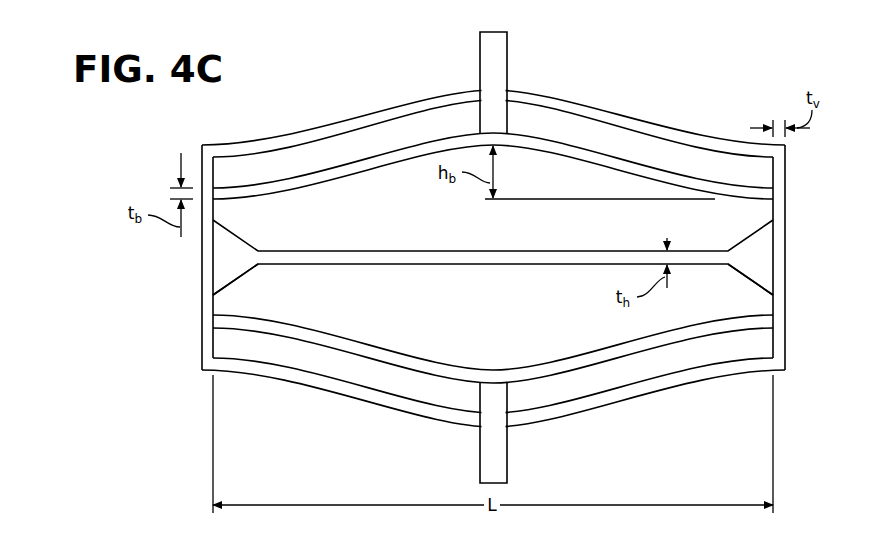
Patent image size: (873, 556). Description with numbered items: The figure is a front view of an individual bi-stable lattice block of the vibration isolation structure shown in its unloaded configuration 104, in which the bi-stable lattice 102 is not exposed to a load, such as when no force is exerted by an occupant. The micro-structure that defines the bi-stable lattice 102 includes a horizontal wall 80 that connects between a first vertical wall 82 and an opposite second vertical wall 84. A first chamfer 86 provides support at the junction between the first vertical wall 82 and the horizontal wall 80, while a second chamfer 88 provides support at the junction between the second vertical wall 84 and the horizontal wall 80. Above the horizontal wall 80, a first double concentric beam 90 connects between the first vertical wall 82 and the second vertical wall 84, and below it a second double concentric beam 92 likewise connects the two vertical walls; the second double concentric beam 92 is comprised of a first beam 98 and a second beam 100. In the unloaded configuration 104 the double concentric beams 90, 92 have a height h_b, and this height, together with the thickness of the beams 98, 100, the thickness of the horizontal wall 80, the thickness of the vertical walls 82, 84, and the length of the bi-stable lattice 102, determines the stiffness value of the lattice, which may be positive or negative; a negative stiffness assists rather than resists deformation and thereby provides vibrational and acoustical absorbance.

The horizontal wall 80 is at (580, 265).
The first vertical wall 82 is at (201, 345).
The second vertical wall 84 is at (787, 230).
The first chamfer 86 is at (238, 280).
The second chamfer 88 is at (753, 283).
The first double concentric beam 90 is at (350, 97).
The second double concentric beam 92 is at (388, 415).
The first beam 98 is at (630, 402).
The second beam 100 is at (427, 362).
The bi-stable lattice 102 is at (443, 50).
The unloaded configuration 104 is at (587, 70).